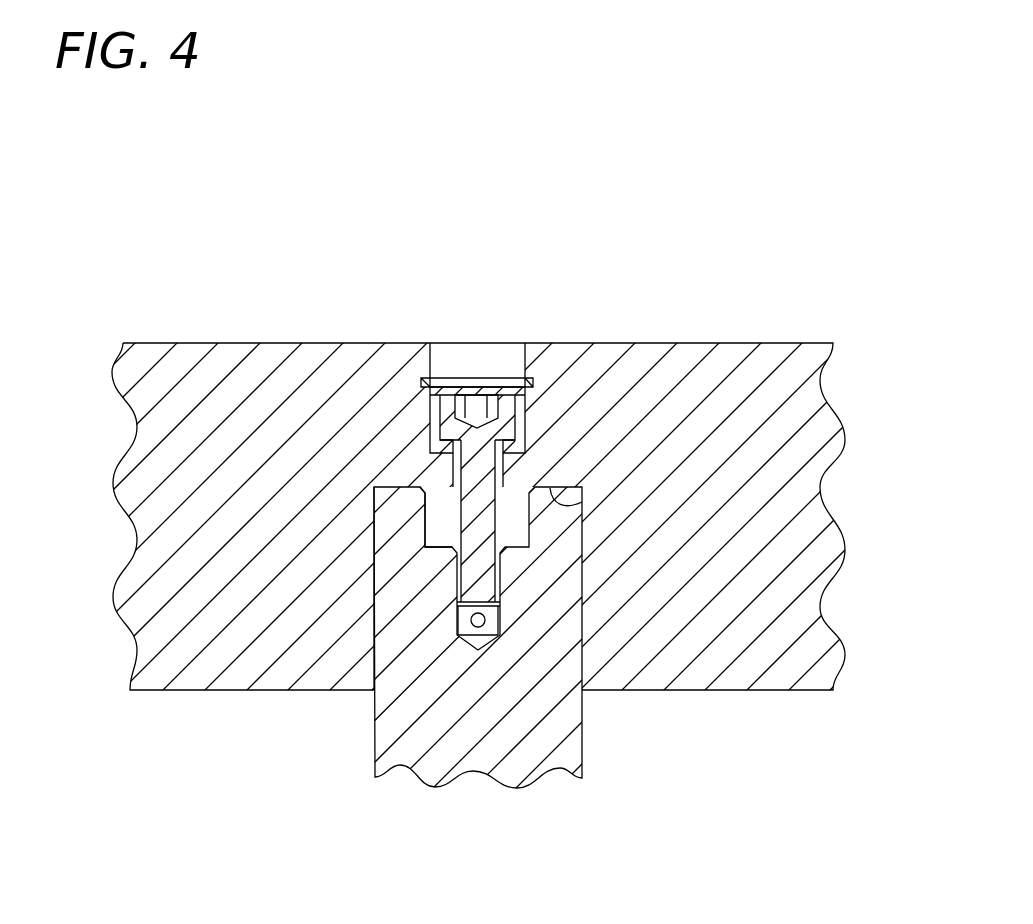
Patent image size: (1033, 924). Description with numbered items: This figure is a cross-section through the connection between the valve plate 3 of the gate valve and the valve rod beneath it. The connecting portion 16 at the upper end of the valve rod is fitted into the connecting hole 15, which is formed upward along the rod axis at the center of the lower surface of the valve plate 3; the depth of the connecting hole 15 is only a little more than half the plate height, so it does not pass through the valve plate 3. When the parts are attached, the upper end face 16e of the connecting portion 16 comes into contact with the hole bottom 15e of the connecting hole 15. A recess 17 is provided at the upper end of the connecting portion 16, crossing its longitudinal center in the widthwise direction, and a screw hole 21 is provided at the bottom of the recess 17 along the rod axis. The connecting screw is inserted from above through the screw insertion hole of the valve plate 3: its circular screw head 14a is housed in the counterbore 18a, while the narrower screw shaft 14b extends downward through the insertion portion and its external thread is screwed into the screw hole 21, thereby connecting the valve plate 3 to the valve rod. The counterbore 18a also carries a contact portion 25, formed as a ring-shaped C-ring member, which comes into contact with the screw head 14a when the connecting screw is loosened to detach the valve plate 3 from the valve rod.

The valve plate 3 is at (743, 370).
The screw head 14a is at (463, 430).
The screw shaft 14b is at (470, 470).
The connecting hole 15 is at (377, 625).
The hole bottom 15e is at (582, 505).
The connecting portion 16 is at (550, 722).
The upper end face 16e is at (533, 486).
The recess 17 is at (447, 513).
The counterbore 18a is at (430, 357).
The screw hole 21 is at (497, 573).
The contact portion 25 is at (505, 378).